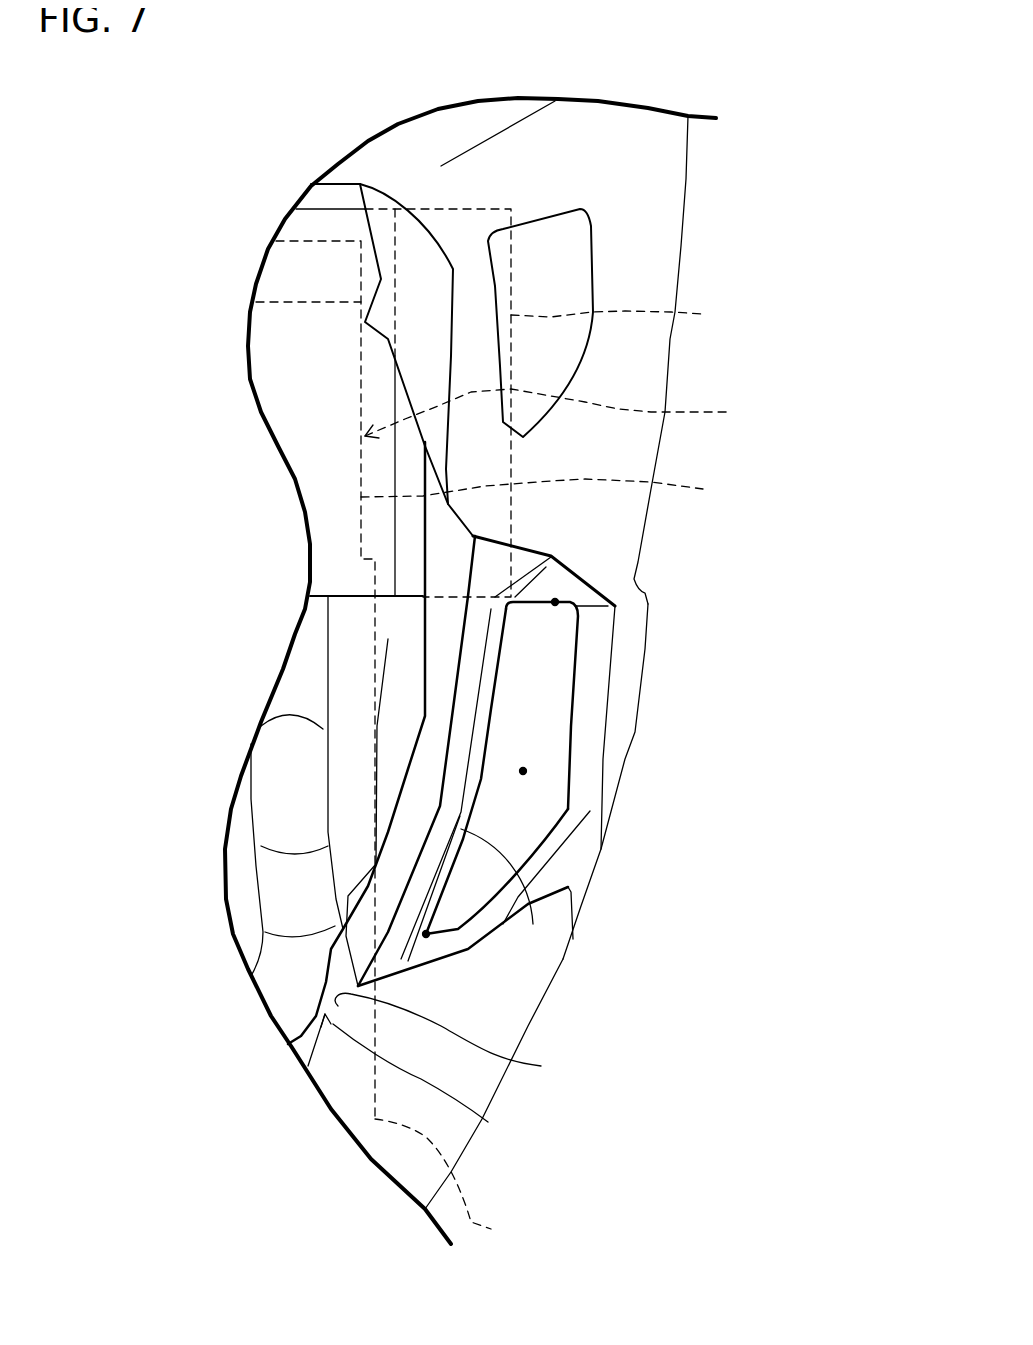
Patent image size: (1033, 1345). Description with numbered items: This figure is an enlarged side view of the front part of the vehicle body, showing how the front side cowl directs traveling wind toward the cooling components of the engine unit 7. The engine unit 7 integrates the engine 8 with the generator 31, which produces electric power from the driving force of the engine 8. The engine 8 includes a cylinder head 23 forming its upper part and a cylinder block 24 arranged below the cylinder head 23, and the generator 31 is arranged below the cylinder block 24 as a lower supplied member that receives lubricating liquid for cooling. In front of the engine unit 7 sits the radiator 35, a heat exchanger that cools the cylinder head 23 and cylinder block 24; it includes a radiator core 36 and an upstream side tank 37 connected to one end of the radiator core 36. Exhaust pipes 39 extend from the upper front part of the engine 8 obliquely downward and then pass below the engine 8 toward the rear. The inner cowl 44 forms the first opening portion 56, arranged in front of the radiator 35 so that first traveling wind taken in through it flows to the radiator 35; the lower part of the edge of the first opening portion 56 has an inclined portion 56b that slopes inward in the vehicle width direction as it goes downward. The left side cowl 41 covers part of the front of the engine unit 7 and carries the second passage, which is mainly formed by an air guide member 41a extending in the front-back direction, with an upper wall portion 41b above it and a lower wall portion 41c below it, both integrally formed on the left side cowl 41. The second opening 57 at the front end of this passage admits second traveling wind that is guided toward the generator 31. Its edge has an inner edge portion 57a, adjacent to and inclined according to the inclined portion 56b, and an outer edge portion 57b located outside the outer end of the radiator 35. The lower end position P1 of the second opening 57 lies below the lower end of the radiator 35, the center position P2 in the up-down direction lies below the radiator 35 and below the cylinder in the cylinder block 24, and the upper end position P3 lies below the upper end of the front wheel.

The left side cowl 41 is at (700, 178).
The air guide member 41a is at (600, 713).
The upper wall portion 41b is at (673, 252).
The lower wall portion 41c is at (490, 1090).
The upstream side tank 37 is at (634, 315).
The engine unit 7 is at (560, 403).
The cylinder block 24 is at (559, 493).
The cylinder head 23 is at (303, 237).
The radiator 35 is at (325, 207).
The radiator core 36 is at (342, 220).
The inner cowl 44 is at (443, 603).
The upper end position P3 is at (557, 603).
The generator 31 is at (545, 640).
The outer edge portion 57b is at (578, 727).
The center position P2 is at (525, 772).
The second opening 57 is at (532, 815).
The inner edge portion 57a is at (570, 968).
The lower end position P1 is at (428, 935).
The inclined portion 56b is at (543, 1067).
The first opening portion 56 is at (490, 1123).
The engine 8 is at (446, 1184).
The exhaust pipes 39 is at (273, 898).